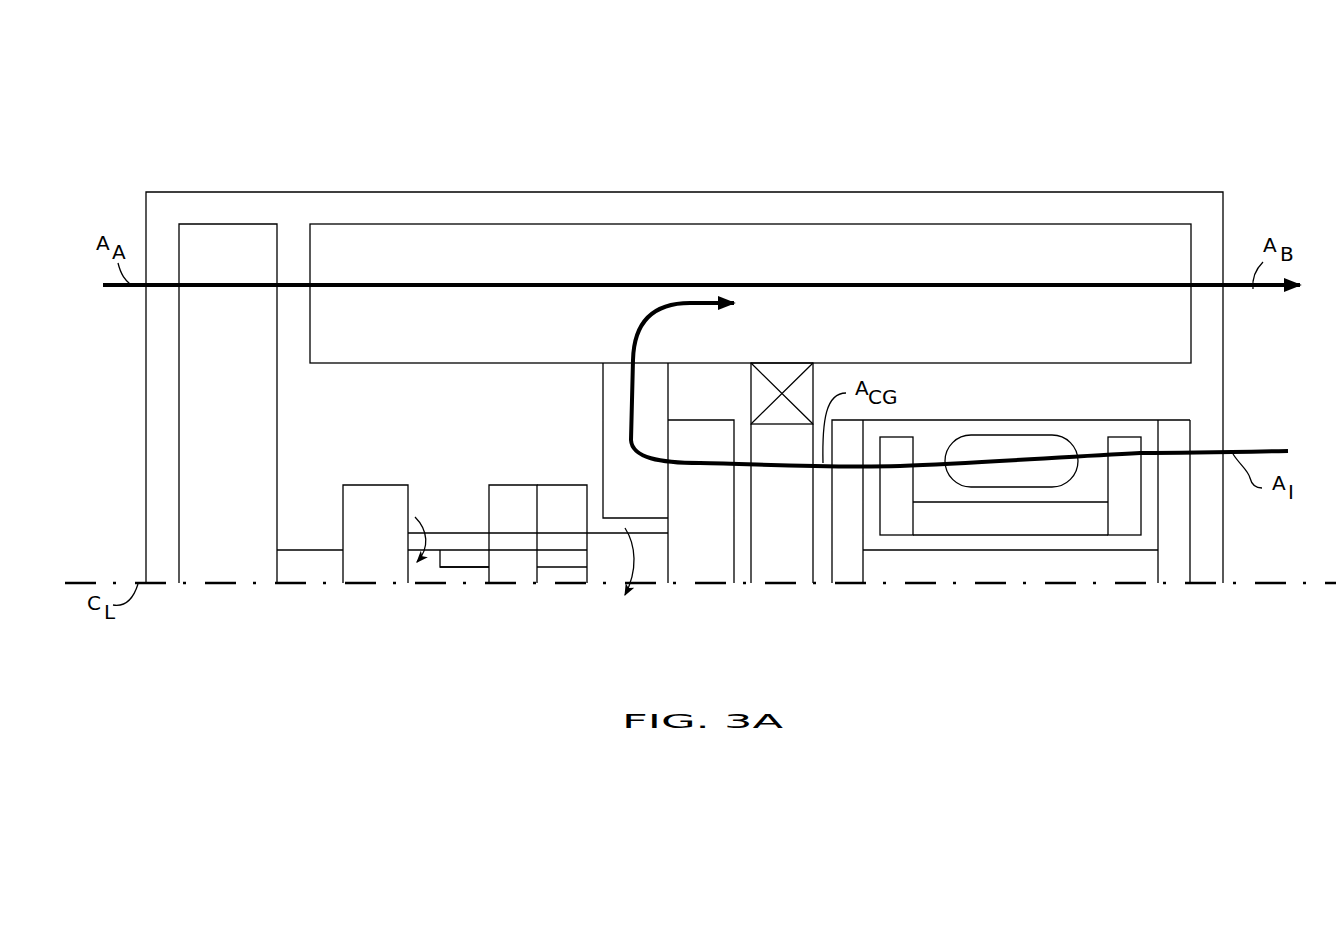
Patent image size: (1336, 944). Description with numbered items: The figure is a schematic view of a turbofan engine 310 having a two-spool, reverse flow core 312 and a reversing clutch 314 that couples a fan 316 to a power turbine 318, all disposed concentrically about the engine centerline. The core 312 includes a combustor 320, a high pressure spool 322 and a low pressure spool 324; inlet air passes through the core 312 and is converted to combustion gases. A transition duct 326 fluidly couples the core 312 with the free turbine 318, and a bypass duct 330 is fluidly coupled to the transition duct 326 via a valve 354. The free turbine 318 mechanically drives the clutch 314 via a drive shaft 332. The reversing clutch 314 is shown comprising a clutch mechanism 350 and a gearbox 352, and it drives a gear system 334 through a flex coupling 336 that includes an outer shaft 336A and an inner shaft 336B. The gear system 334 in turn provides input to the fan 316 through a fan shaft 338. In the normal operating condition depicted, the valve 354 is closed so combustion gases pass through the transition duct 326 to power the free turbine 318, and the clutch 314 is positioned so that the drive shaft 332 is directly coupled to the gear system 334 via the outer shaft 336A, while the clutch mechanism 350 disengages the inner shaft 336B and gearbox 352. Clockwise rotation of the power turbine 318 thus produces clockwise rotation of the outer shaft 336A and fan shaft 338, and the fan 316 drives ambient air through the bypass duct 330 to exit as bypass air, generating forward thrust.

The turbofan engine 310 is at (376, 150).
The two-spool, reverse flow core 312 is at (986, 585).
The reversing clutch 314 is at (563, 597).
The fan 316 is at (228, 403).
The power turbine 318 is at (668, 473).
The combustor 320 is at (990, 445).
The high pressure spool 322 is at (1126, 434).
The low pressure spool 324 is at (1177, 418).
The transition duct 326 is at (782, 503).
The bypass duct 330 is at (500, 225).
The drive shaft 332 is at (652, 567).
The gear system 334 is at (375, 534).
The flex coupling 336 is at (502, 592).
The outer shaft 336A is at (460, 543).
The inner shaft 336B is at (473, 576).
The fan shaft 338 is at (333, 565).
The clutch mechanism 350 is at (519, 491).
The gearbox 352 is at (577, 491).
The valve 354 is at (801, 363).